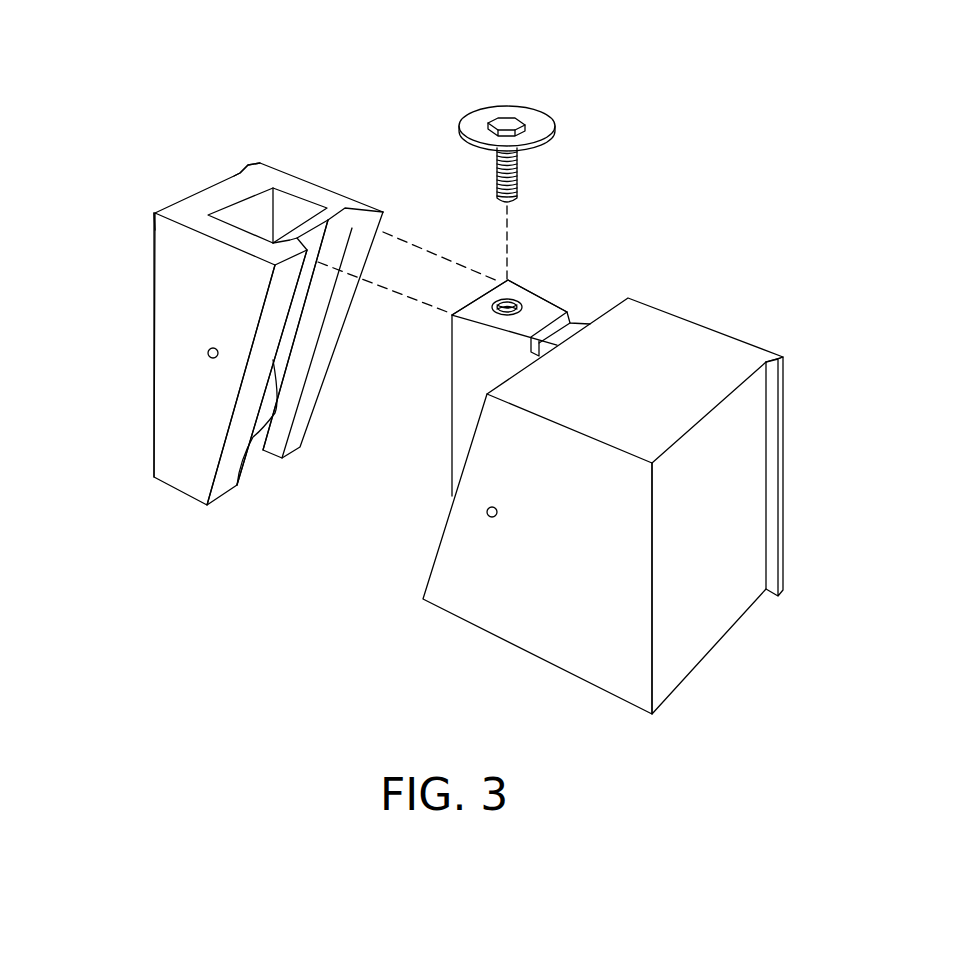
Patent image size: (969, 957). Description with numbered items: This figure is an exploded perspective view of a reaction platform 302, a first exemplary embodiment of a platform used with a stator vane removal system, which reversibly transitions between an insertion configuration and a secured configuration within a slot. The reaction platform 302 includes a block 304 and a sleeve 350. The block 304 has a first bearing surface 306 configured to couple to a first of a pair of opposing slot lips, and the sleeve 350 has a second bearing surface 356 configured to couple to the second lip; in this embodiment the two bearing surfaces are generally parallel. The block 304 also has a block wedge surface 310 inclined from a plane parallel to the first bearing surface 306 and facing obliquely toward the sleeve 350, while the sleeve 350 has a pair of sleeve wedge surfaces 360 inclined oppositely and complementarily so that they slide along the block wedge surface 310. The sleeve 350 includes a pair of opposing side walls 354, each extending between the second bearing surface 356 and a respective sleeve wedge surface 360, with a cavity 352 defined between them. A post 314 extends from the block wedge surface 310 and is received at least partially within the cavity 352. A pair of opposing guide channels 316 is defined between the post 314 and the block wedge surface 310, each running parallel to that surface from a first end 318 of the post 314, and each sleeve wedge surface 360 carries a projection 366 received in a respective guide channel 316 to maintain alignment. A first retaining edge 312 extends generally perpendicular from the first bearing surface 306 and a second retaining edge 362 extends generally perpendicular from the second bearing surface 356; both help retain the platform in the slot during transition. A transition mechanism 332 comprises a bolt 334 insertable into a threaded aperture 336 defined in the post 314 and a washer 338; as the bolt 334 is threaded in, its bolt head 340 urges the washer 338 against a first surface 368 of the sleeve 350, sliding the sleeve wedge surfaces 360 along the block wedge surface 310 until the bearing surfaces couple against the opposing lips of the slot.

The reaction platform 302 is at (108, 100).
The block 304 is at (710, 341).
The first bearing surface 306 is at (689, 622).
The block wedge surface 310 is at (444, 538).
The first retaining edge 312 is at (783, 460).
The post 314 is at (464, 362).
The guide channels 316 is at (545, 300).
The first end of post 318 is at (535, 303).
The transition mechanism 332 is at (610, 64).
The bolt 334 is at (517, 170).
The threaded aperture 336 is at (484, 293).
The washer 338 is at (540, 123).
The bolt head 340 is at (507, 118).
The sleeve 350 is at (183, 293).
The cavity 352 is at (284, 214).
The side walls 354 is at (292, 200).
The second bearing surface 356 is at (195, 197).
The sleeve wedge surfaces 360 is at (293, 445).
The second retaining edge 362 is at (237, 168).
The projections 366 is at (297, 242).
The first surface of sleeve 368 is at (155, 213).